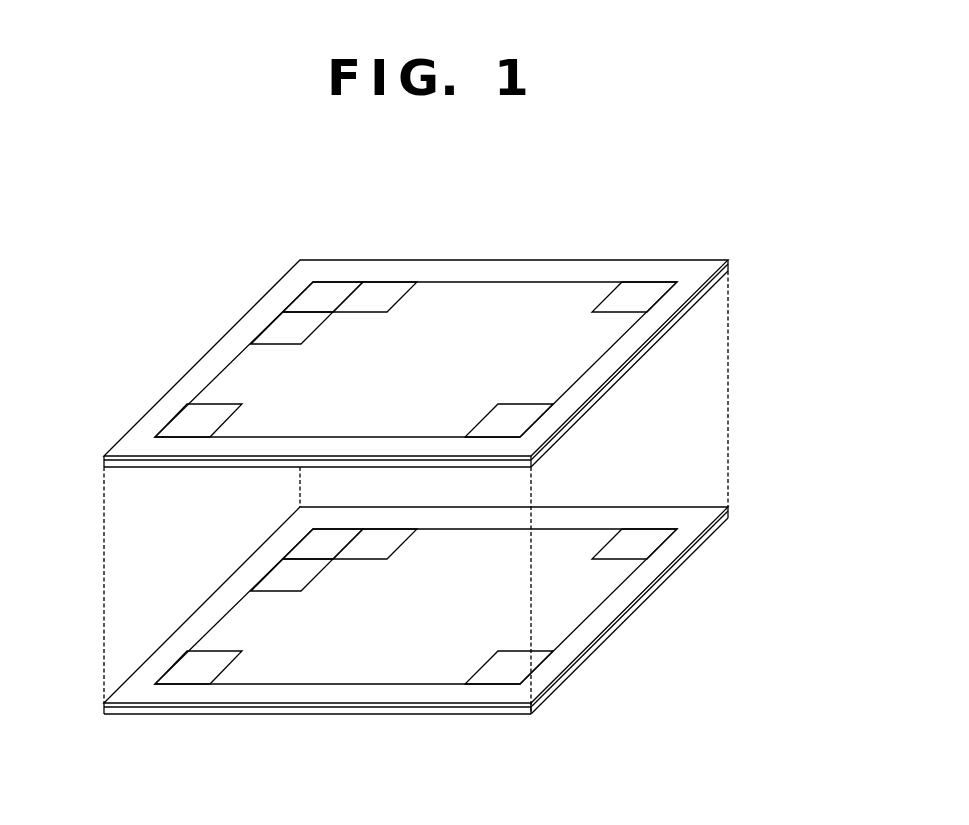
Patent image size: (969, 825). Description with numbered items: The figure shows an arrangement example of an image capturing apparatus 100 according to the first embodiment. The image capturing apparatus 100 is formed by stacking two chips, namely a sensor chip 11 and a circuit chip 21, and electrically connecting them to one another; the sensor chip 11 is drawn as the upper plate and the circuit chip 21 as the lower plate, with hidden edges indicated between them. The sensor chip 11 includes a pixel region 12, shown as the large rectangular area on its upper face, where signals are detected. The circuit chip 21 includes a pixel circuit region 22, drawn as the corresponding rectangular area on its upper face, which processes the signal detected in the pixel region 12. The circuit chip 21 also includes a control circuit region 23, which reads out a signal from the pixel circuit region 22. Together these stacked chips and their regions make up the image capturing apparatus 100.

The image capturing apparatus 100 is at (772, 261).
The sensor chip 11 is at (633, 355).
The pixel region 12 is at (245, 382).
The circuit chip 21 is at (638, 605).
The pixel circuit region 22 is at (243, 610).
The control circuit region 23 is at (148, 670).